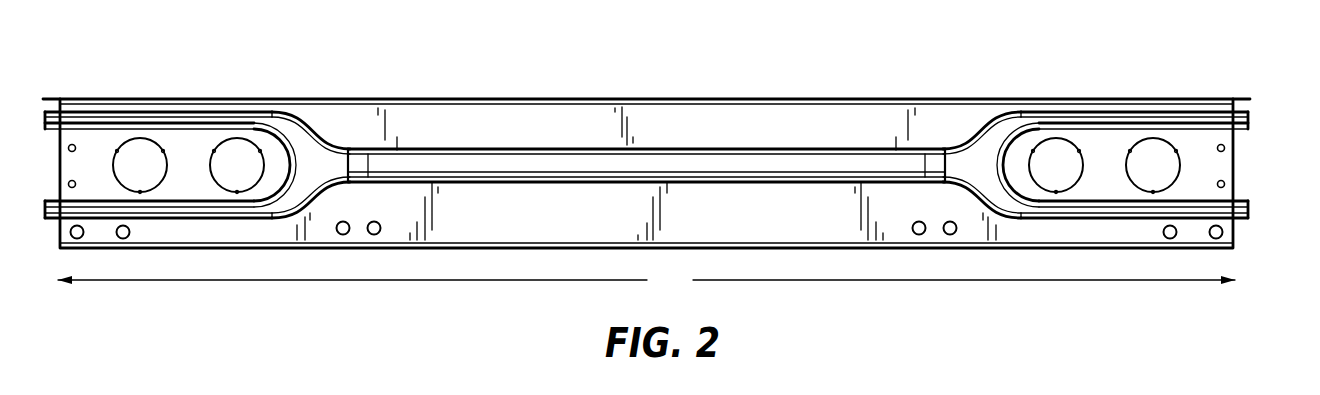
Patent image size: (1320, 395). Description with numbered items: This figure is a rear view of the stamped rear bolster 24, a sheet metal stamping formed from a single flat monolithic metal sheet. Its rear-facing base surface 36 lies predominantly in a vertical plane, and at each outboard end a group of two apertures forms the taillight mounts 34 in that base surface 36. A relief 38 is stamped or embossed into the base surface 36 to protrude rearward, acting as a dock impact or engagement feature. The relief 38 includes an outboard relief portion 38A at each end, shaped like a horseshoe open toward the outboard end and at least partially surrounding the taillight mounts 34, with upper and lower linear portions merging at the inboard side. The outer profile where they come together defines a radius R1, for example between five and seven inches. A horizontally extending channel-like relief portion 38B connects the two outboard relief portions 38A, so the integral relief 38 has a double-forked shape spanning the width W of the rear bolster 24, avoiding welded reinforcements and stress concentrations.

The rear bolster 24 is at (955, 83).
The taillight mounts 34 is at (1180, 167).
The rear-facing base surface 36 is at (787, 140).
The relief 38 is at (413, 155).
The outboard relief portion 38A is at (187, 115).
The relief portion 38B is at (570, 167).
The radius R1 is at (347, 143).
The width W is at (646, 281).